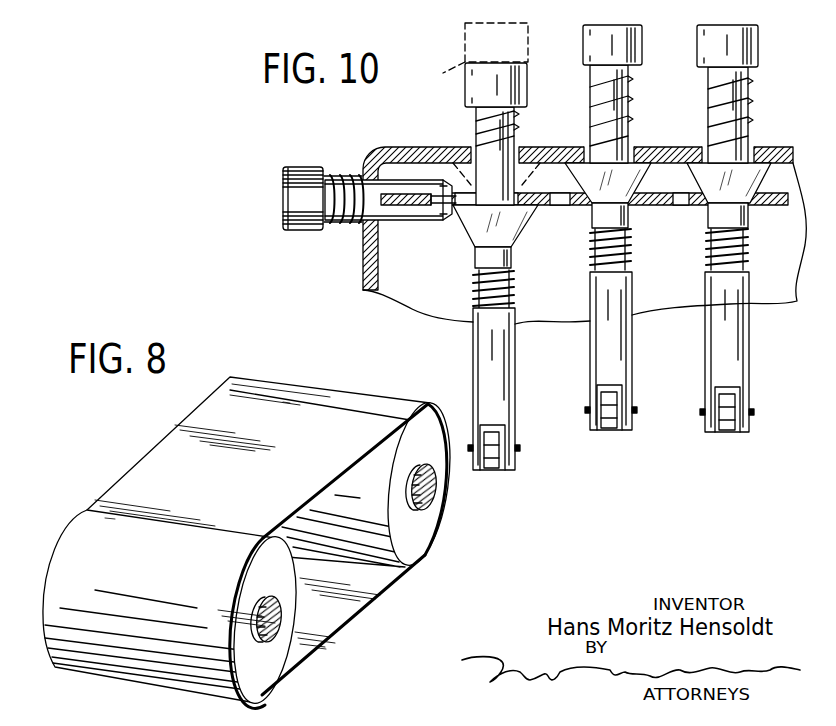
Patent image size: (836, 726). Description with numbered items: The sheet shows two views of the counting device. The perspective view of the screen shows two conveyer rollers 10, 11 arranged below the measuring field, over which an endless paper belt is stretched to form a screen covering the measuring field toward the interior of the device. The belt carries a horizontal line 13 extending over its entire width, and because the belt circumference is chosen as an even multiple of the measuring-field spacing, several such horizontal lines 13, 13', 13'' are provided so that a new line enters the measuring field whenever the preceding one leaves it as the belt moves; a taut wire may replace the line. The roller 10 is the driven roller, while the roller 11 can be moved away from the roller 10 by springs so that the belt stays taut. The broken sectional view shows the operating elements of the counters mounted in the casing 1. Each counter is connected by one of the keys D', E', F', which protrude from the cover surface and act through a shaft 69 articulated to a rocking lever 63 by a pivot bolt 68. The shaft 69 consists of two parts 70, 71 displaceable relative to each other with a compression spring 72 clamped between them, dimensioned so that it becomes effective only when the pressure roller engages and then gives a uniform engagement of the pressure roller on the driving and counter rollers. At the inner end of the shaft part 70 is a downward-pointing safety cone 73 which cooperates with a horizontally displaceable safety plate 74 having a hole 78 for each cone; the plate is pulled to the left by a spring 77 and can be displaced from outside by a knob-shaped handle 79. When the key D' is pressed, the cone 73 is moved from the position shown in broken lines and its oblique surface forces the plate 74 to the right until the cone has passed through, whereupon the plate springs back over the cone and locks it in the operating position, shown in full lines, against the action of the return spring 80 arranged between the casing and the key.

In FIG. 10, the frame bracket 1 is at (379, 148).
In FIG. 10, the knob-shaped handle 79 is at (296, 190).
In FIG. 10, the spring 77 is at (341, 224).
In FIG. 10, the hole 78 is at (436, 221).
In FIG. 10, the return spring 80 is at (478, 127).
In FIG. 10, the shaft part 70 is at (608, 128).
In FIG. 10, the safety cone 73 is at (503, 225).
In FIG. 10, the compression spring 72 is at (511, 290).
In FIG. 10, the shaft part 71 is at (490, 352).
In FIG. 10, the shaft 69 is at (590, 364).
In FIG. 10, the pivot bolt 68 is at (518, 448).
In FIG. 10, the rocking lever 63 is at (492, 470).
In FIG. 10, the safety plate 74 is at (767, 207).
In FIG. 10, the key D' is at (476, 85).
In FIG. 10, the key E' is at (593, 45).
In FIG. 10, the key F' is at (710, 46).
In FIG. 8, the conveyer roller 10 is at (412, 532).
In FIG. 8, the conveyer roller 11 is at (262, 668).
In FIG. 8, the horizontal line 13 is at (308, 379).
In FIG. 8, the horizontal line 13' is at (97, 487).
In FIG. 8, the horizontal line 13'' is at (347, 653).